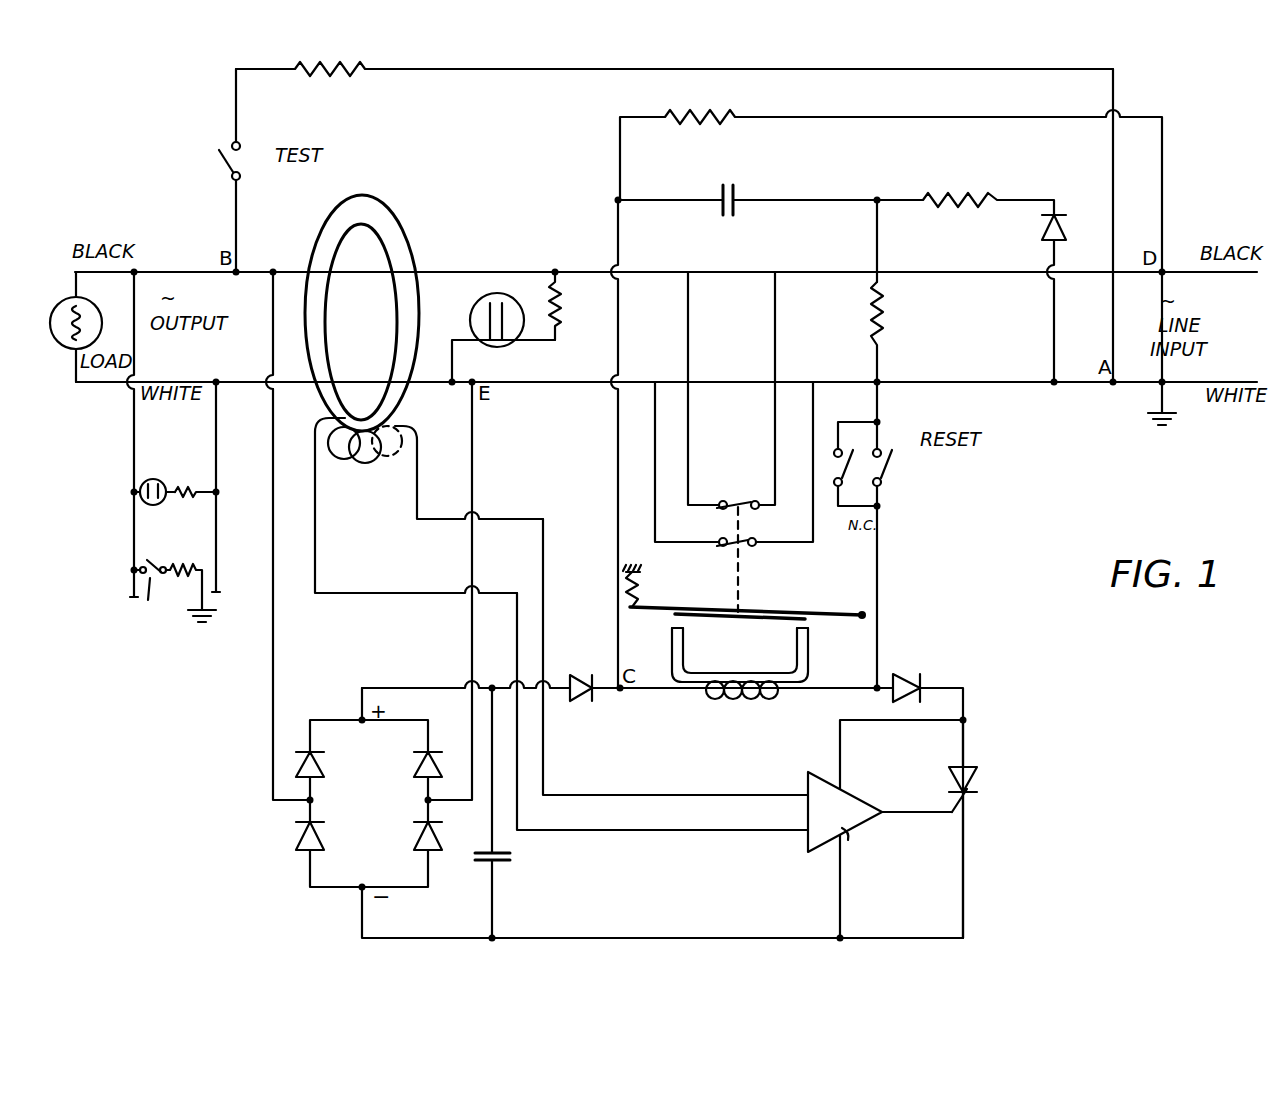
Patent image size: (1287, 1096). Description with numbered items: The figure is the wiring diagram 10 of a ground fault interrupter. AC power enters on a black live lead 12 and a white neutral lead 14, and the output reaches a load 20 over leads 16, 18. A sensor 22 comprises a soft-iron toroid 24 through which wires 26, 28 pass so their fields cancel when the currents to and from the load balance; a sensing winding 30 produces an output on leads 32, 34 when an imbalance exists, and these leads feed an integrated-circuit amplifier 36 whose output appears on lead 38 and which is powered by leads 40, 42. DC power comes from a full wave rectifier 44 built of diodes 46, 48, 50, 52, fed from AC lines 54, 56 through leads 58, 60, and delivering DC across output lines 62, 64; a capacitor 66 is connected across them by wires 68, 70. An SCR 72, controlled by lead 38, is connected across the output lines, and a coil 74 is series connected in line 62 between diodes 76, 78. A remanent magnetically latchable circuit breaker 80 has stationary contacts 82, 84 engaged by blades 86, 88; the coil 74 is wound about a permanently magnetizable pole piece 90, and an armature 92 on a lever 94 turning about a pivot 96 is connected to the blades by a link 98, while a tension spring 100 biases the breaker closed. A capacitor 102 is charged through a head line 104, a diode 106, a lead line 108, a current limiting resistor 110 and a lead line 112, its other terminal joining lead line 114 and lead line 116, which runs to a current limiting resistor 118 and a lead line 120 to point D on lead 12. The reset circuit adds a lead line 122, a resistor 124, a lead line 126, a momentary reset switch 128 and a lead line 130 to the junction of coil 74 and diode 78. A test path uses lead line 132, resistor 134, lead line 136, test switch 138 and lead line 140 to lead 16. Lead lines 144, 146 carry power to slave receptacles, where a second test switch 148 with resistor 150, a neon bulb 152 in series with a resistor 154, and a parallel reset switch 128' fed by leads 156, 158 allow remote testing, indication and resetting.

The GFI wiring diagram 10 is at (210, 732).
The live lead 12 is at (1178, 242).
The neutral lead 14 is at (1134, 388).
The lead output line 16 is at (190, 266).
The lead output line 18 is at (232, 384).
The load 20 is at (68, 340).
The sensor 22 is at (410, 199).
The toroid 24 is at (318, 420).
The wire 26 is at (357, 276).
The wire 28 is at (350, 377).
The sensing winding 30 is at (393, 456).
The lead 32 is at (417, 476).
The lead 34 is at (320, 484).
The amplifier 36 is at (786, 706).
The output lead 38 is at (920, 814).
The power lead 40 is at (872, 722).
The power lead 42 is at (840, 914).
The rectifier 44 is at (289, 820).
The diode 46 is at (322, 758).
The diode 48 is at (420, 756).
The diode 50 is at (302, 846).
The diode 52 is at (432, 850).
The line 54 is at (262, 268).
The line 56 is at (596, 374).
The lead 58 is at (273, 668).
The lead 60 is at (474, 492).
The output line 62 is at (402, 686).
The output line 64 is at (416, 942).
The capacitor 66 is at (514, 858).
The wire 68 is at (490, 820).
The wire 70 is at (494, 906).
The SCR 72 is at (970, 770).
The coil 74 is at (725, 672).
The diode 76 is at (586, 674).
The diode 78 is at (905, 676).
The circuit breaker 80 is at (796, 702).
The stationary contact 82 is at (720, 500).
The stationary contact 84 is at (715, 548).
The blade 86 is at (750, 500).
The blade 88 is at (720, 536).
The pole piece 90 is at (810, 676).
The armature 92 is at (780, 618).
The lever 94 is at (830, 610).
The pivot 96 is at (860, 622).
The link 98 is at (742, 572).
The tension spring 100 is at (640, 588).
The capacitor 102 is at (732, 180).
The head line 104 is at (1050, 250).
The diode 106 is at (1062, 216).
The lead line 108 is at (1020, 182).
The current limiting resistor 110 is at (942, 184).
The lead line 112 is at (824, 190).
The lead line 114 is at (672, 188).
The lead line 116 is at (616, 230).
The current limiting resistor 118 is at (702, 118).
The lead line 120 is at (972, 118).
The lead line 122 is at (880, 243).
The current limiting resistor 124 is at (883, 306).
The lead line 126 is at (882, 406).
The reset switch 128 is at (892, 464).
The reset switch 128' is at (845, 510).
The lead line 130 is at (880, 570).
The lead line 132 is at (1112, 306).
The current limiting resistor 134 is at (343, 72).
The lead line 136 is at (234, 106).
The test switch 138 is at (243, 148).
The lead line 140 is at (240, 212).
The lead line 144 is at (132, 450).
The lead line 146 is at (216, 456).
The test switch 148 is at (150, 606).
The resistor 150 is at (186, 562).
The neon bulb 152 is at (478, 308).
The resistor 154 is at (186, 488).
The lead 156 is at (852, 422).
The lead 158 is at (882, 508).